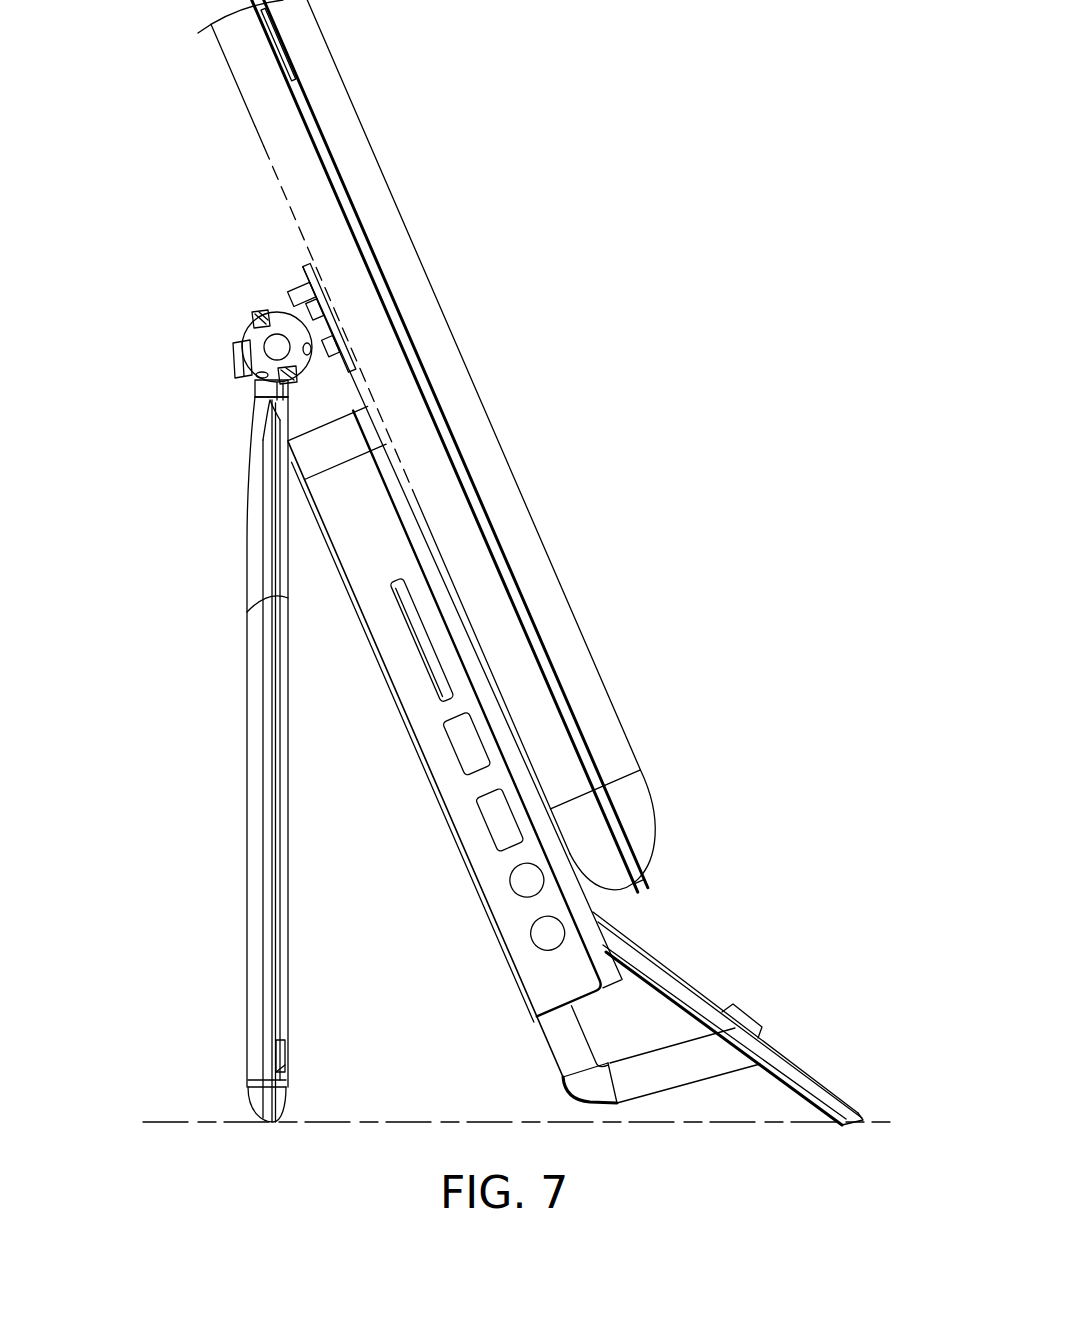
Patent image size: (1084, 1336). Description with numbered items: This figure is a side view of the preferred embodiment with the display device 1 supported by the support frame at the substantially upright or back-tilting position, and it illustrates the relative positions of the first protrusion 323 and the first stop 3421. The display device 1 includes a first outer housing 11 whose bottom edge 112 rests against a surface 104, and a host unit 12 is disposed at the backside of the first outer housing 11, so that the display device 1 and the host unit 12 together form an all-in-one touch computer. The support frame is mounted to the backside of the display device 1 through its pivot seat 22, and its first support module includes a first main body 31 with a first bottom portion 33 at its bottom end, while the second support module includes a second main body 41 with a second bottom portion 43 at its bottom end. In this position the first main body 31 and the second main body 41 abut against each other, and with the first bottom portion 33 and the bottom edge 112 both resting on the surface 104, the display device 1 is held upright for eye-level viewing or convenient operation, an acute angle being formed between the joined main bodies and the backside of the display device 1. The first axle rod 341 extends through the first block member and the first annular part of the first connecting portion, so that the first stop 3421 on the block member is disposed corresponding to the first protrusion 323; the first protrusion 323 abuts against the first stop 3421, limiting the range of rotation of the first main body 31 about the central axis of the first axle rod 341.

The display device 1 is at (237, 97).
The first outer housing 11 is at (360, 117).
The bottom edge 112 is at (860, 1120).
The host unit 12 is at (515, 940).
The pivot seat 22 is at (303, 300).
The first axle rod 341 is at (262, 349).
The first stop 3421 is at (285, 308).
The first protrusion 323 is at (320, 346).
The first main body 31 is at (247, 770).
The second main body 41 is at (288, 938).
The second bottom portion 43 is at (277, 1055).
The first bottom portion 33 is at (285, 1103).
The surface 104 is at (190, 1120).